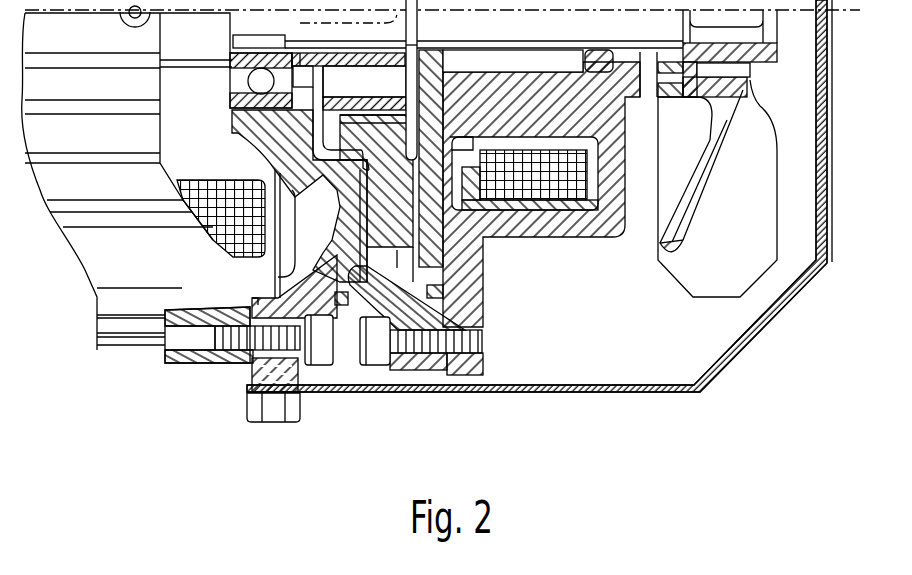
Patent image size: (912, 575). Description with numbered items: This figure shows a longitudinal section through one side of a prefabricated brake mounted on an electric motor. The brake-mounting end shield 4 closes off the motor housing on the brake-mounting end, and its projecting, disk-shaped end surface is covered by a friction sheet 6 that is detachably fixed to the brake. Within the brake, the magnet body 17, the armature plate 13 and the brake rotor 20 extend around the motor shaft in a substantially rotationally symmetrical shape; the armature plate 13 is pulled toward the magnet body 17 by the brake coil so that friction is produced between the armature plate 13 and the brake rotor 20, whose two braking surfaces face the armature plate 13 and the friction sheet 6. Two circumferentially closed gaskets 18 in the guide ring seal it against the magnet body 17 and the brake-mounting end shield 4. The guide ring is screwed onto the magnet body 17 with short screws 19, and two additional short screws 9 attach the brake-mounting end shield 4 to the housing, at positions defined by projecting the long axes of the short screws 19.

The brake-mounting end shield 4 is at (250, 303).
The friction sheet 6 is at (347, 237).
The short screws 9 is at (218, 364).
The armature plate 13 is at (447, 253).
The magnet body 17 is at (538, 235).
The gaskets 18 is at (445, 292).
The short screws 19 is at (417, 360).
The brake rotor 20 is at (353, 196).